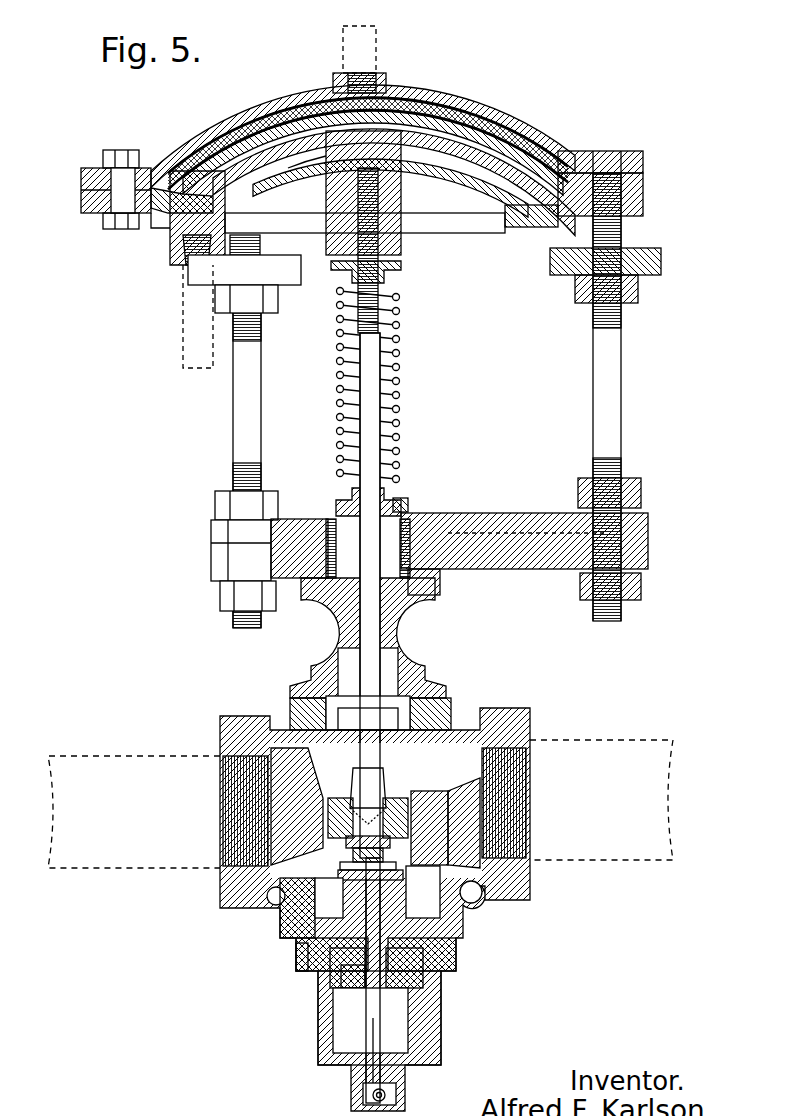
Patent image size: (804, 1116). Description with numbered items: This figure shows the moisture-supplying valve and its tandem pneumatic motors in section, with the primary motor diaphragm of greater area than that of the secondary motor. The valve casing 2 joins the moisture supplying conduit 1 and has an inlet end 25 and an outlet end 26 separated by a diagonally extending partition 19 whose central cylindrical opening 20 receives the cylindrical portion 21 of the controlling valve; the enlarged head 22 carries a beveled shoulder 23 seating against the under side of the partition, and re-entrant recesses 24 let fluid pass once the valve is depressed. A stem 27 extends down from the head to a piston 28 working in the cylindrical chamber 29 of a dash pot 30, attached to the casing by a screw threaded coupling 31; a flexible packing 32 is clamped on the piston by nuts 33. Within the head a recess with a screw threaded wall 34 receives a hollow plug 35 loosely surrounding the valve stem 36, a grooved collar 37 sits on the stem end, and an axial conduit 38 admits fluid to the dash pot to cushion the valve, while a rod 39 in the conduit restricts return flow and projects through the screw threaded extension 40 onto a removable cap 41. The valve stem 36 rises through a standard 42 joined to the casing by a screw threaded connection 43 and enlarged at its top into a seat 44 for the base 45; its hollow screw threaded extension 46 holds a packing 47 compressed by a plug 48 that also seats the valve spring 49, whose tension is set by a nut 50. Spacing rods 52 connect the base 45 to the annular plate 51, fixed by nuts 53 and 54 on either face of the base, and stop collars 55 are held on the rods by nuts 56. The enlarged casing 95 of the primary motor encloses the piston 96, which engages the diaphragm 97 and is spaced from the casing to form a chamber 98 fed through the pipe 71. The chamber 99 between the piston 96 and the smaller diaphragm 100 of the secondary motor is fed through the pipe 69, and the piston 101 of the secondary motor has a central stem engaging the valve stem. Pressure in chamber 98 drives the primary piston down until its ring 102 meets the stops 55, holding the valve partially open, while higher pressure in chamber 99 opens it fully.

The pipe line 1 is at (600, 738).
The valve casing 2 is at (500, 700).
The partition 19 is at (434, 796).
The central cylindrical opening 20 is at (413, 783).
The cylindrical portion 21 is at (322, 795).
The enlarged head 22 is at (343, 834).
The beveled shoulder 23 is at (318, 820).
The re-entrant recesses 24 is at (376, 770).
The inlet end 25 is at (498, 778).
The outlet end 26 is at (238, 772).
The stem 27 is at (300, 885).
The piston 28 is at (300, 940).
The cylindrical chamber 29 is at (333, 998).
The dash pot 30 is at (432, 1003).
The screw threaded coupling 31 is at (462, 896).
The flexible packing 32 is at (340, 950).
The nut 33 is at (340, 968).
The screw threaded wall 34 is at (330, 858).
The screw threaded hollow plug 35 is at (332, 842).
The valve stem 36 is at (348, 732).
The collar 37 is at (398, 862).
The conduit 38 is at (320, 920).
The rod 39 is at (366, 1012).
The screw threaded extension 40 is at (355, 1076).
The cap 41 is at (396, 1090).
The standard 42 is at (392, 640).
The screw threaded connection 43 is at (443, 708).
The seat 44 is at (432, 573).
The base 45 is at (482, 504).
The hollow screw threaded extension 46 is at (399, 498).
The packing 47 is at (333, 575).
The screw threaded plug 48 is at (398, 482).
The valve spring 49 is at (390, 392).
The nut 50 is at (394, 260).
The plate 51 is at (630, 186).
The spacing rods 52 is at (612, 358).
The nut 53 is at (636, 486).
The nut 54 is at (638, 585).
The stop collars 55 is at (656, 247).
The nuts 56 is at (632, 288).
The pipe 69 is at (176, 326).
The pipe 71 is at (370, 36).
The casing 95 is at (487, 100).
The piston 96 is at (508, 140).
The diaphragm 97 is at (546, 150).
The chamber 98 is at (412, 85).
The chamber 99 is at (440, 112).
The diaphragm 100 is at (452, 185).
The piston 101 is at (390, 178).
The ring 102 is at (522, 212).